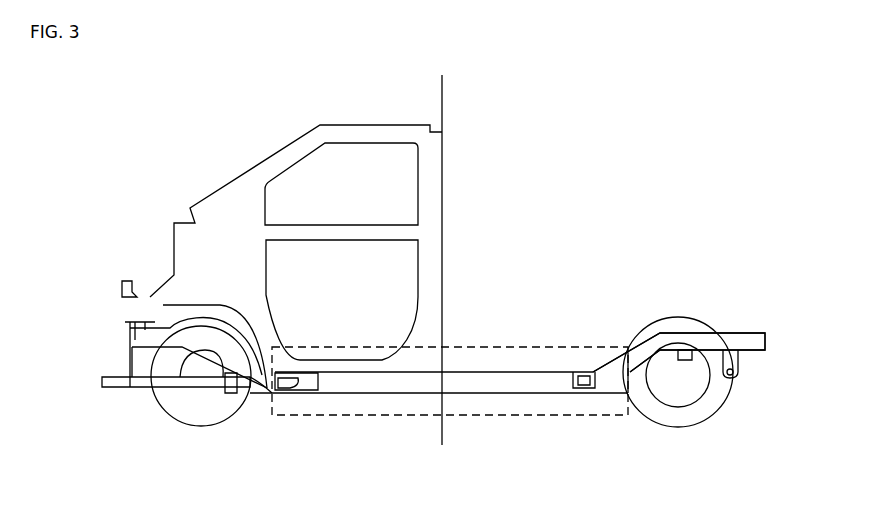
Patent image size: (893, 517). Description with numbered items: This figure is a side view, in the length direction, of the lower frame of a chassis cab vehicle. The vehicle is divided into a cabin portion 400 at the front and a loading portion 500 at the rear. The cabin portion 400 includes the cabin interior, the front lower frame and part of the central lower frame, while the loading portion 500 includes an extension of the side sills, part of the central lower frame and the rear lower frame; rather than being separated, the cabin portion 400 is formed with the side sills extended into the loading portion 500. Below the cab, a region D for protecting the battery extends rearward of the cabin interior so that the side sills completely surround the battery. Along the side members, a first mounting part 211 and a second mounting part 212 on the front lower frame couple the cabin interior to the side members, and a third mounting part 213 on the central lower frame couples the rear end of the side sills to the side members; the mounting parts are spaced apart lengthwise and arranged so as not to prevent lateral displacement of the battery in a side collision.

The cabin portion 400 is at (366, 207).
The loading portion 500 is at (576, 207).
The first mounting part 211 is at (130, 321).
The second mounting part 212 is at (293, 390).
The third mounting part 213 is at (585, 388).
The region for protecting the battery D is at (395, 417).